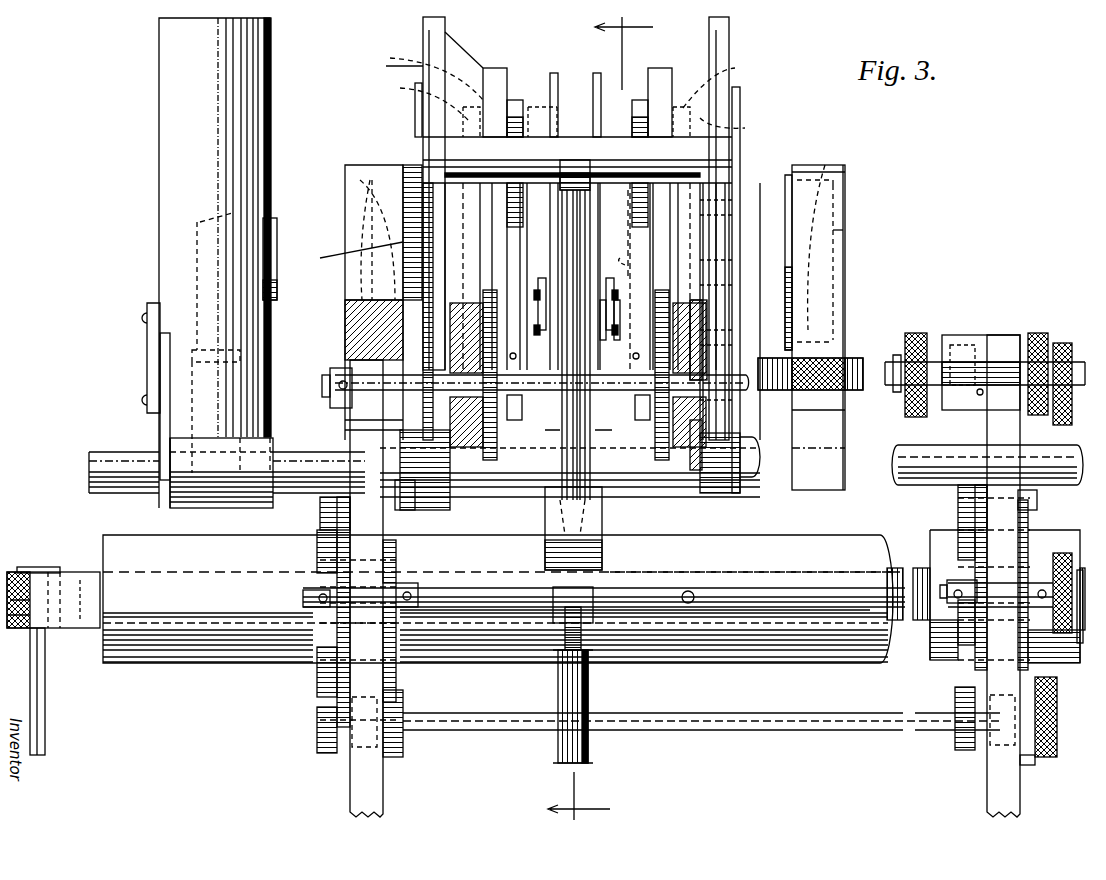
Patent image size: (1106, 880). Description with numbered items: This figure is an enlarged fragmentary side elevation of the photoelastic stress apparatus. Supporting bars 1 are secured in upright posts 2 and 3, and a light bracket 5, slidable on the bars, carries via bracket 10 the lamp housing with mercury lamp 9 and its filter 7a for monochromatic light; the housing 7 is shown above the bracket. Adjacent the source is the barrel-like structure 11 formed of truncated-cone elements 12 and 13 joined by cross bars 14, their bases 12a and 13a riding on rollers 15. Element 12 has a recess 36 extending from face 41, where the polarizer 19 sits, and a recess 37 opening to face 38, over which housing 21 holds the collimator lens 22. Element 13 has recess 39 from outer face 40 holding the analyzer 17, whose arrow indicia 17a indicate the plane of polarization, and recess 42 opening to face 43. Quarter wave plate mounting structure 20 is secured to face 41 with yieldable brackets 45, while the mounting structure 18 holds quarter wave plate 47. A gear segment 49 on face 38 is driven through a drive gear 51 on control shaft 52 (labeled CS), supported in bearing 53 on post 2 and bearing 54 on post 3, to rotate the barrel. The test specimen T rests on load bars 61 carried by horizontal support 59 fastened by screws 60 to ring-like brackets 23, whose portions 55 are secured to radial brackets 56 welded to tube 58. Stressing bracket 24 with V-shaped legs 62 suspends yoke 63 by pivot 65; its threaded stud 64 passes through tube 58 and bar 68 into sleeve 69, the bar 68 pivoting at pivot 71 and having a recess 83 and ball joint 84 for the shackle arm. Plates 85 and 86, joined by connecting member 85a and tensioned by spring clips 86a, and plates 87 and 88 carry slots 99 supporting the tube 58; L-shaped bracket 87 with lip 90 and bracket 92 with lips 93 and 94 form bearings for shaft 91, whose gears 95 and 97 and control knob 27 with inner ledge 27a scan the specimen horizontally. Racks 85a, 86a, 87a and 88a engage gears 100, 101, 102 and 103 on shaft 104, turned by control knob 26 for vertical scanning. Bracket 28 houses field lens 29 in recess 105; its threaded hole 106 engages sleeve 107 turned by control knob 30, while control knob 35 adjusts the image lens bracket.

The supporting bars 1 is at (105, 452).
The upright post 2 is at (350, 440).
The upright post 3 is at (1042, 440).
The light bracket 5 is at (136, 356).
The column 7 is at (159, 128).
The filter 7a is at (277, 248).
The lamp 9 is at (200, 222).
The bracket 10 is at (147, 330).
The barrel-like structure 11 is at (503, 64).
The element 12 is at (460, 38).
The base 12a is at (423, 22).
The element 13 is at (709, 30).
The base 13a is at (729, 28).
The cross bars 14 is at (560, 137).
The rollers 15 is at (435, 460).
The analyzer 17 is at (735, 68).
The indicia 17a is at (735, 205).
The quarter wave plate mounting structure 18 is at (620, 220).
The polarizer 19 is at (427, 99).
The quarter wave plate mounting structure 20 is at (540, 224).
The housing 21 is at (366, 170).
The collimator lens 22 is at (345, 200).
The brackets 23 is at (554, 73).
The stressing bracket 24 is at (584, 158).
The control knob 26 is at (1078, 660).
The control knob 27 is at (1057, 705).
The inner ledge 27a is at (1030, 765).
The bracket 28 is at (845, 438).
The field lens 29 is at (843, 232).
The control knob 30 is at (915, 333).
The control knob 35 is at (1038, 333).
The circular recess 36 is at (434, 67).
The circular recess 37 is at (415, 115).
The face 38 is at (393, 65).
The circular recess 39 is at (739, 127).
The outer face 40 is at (740, 95).
The face 41 is at (510, 100).
The circular recess 42 is at (660, 68).
The face 43 is at (636, 100).
The L-shaped yieldable brackets 45 is at (516, 118).
The quarter wave plate 47 is at (615, 251).
The gear segment 49 is at (350, 254).
The drive gear 51 is at (420, 318).
The control shaft 52 is at (742, 375).
The bearing 53 is at (545, 300).
The bearing 54 is at (990, 398).
The downwardly extending portions 55 is at (530, 408).
The radially extending brackets 56 is at (545, 545).
The tube 58 is at (740, 664).
The horizontal support 59 is at (605, 300).
The screws 60 is at (618, 300).
The load bars 61 is at (534, 325).
The V-shaped legs 62 is at (545, 430).
The yoke 63 is at (580, 510).
The threaded stud 64 is at (558, 680).
The pivot 65 is at (612, 460).
The bar 68 is at (665, 572).
The sleeve 69 is at (590, 698).
The pivot 71 is at (700, 590).
The recess 83 is at (20, 628).
The ball joint connection 84 is at (35, 572).
The plate 85 is at (396, 680).
The connecting member 85a is at (396, 552).
The plate 86 is at (317, 682).
The spring clips 86a is at (320, 540).
The plate 87 is at (320, 517).
The rack 87a is at (1018, 665).
The plate 88 is at (958, 518).
The rack 88a is at (958, 640).
The lip 90 is at (317, 748).
The shaft 91 is at (488, 735).
The L-shaped bracket 92 is at (403, 750).
The lip 93 is at (1037, 498).
The lip 94 is at (955, 745).
The gear 95 is at (360, 760).
The gear 97 is at (988, 750).
The slots 99 is at (400, 500).
The gear 100 is at (415, 585).
The gear 101 is at (318, 572).
The gear 102 is at (1030, 585).
The gear 103 is at (945, 585).
The shaft 104 is at (775, 602).
The recess 105 is at (826, 165).
The threaded hole 106 is at (835, 360).
The sleeve 107 is at (850, 362).
The test specimen T is at (562, 248).
The control shaft CS is at (990, 327).